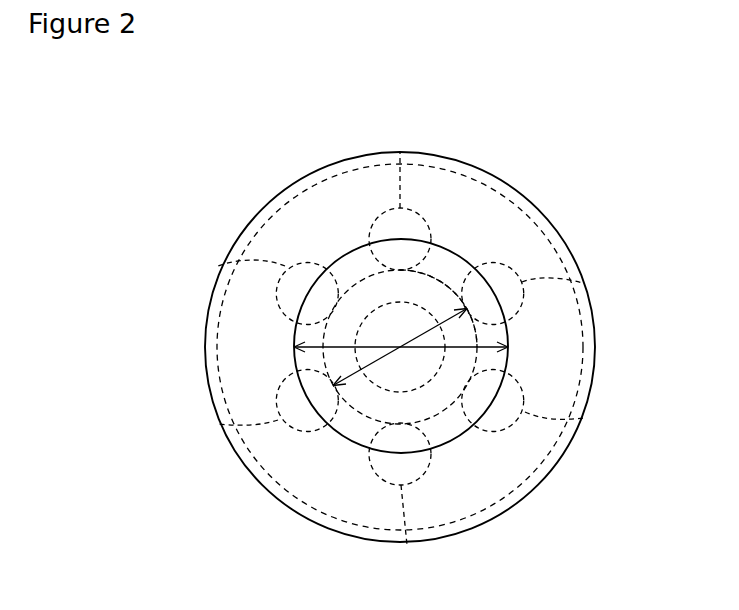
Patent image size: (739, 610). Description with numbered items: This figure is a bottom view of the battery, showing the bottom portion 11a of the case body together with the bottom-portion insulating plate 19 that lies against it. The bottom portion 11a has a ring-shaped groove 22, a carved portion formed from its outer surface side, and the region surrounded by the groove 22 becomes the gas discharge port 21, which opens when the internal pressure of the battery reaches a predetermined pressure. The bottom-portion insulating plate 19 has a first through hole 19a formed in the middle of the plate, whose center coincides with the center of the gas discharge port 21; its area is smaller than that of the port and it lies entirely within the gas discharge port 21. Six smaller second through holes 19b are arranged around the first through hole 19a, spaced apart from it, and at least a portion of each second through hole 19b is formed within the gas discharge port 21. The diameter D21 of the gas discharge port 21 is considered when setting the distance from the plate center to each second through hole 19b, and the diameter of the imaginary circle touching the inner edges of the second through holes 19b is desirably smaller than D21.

The bottom portion 11a is at (588, 111).
The bottom-portion insulating plate 19 is at (560, 355).
The first through hole 19a is at (407, 375).
The second through holes 19b is at (400, 152).
The gas discharge port 21 is at (342, 256).
The groove 22 is at (349, 275).
The diameter of the gas discharge port D21 is at (313, 347).